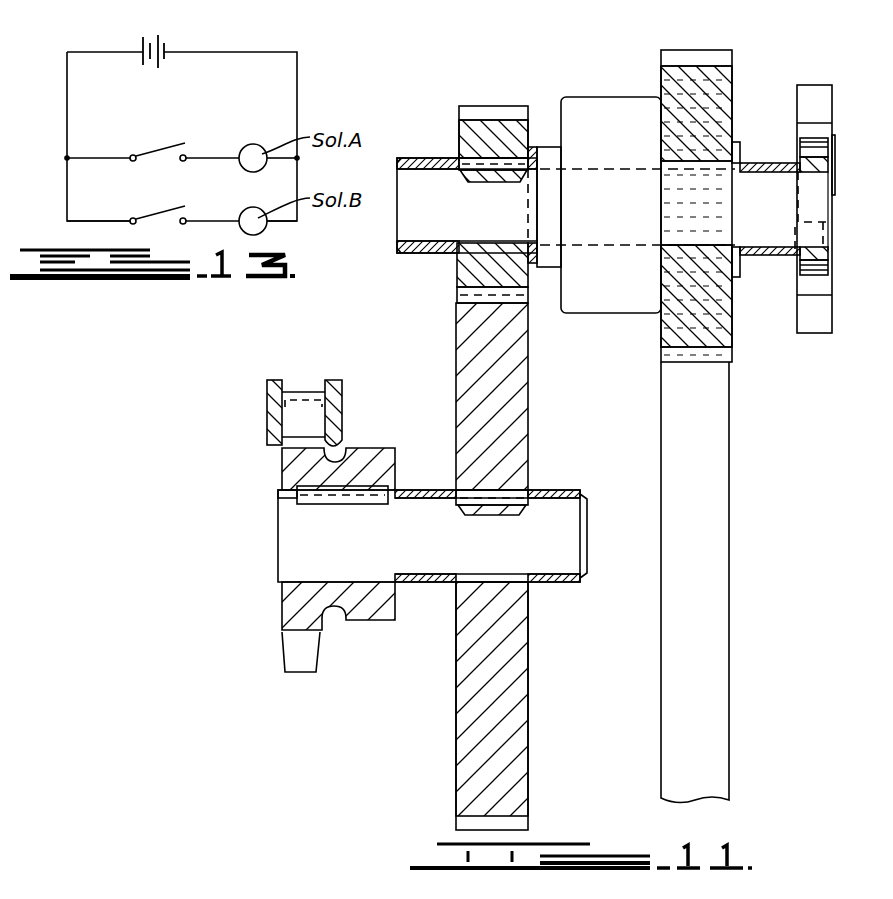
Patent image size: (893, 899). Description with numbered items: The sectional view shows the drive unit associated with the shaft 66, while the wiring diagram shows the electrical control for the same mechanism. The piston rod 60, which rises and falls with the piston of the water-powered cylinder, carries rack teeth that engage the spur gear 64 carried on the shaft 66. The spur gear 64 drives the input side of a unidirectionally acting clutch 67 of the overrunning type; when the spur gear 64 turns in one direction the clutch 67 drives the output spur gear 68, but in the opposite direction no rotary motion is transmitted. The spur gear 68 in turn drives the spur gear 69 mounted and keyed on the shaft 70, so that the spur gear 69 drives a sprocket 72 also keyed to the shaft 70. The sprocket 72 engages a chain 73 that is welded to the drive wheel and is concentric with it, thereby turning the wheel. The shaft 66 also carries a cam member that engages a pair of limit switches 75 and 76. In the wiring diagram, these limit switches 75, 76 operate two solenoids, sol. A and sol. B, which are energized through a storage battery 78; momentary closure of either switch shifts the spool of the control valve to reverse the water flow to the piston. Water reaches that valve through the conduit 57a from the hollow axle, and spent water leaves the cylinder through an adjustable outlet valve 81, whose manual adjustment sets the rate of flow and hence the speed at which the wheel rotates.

In FIG. 11, the piston rod 60 is at (703, 648).
In FIG. 11, the spur gear 64 is at (668, 77).
In FIG. 11, the shaft 66 is at (757, 186).
In FIG. 11, the unidirectionally acting clutch 67 is at (597, 300).
In FIG. 11, the output spur gear 68 is at (470, 126).
In FIG. 11, the spur gear 69 is at (470, 368).
In FIG. 11, the shaft 70 is at (558, 543).
In FIG. 11, the sprocket 72 is at (372, 612).
In FIG. 11, the chain 73 is at (268, 400).
In FIG. 13, the limit switch 75 is at (167, 124).
In FIG. 13, the limit switch 76 is at (166, 210).
In FIG. 13, the storage battery 78 is at (163, 52).
In FIG. 11, the conduit 57a is at (139, 887).
In FIG. 11, the adjustable outlet valve 81 is at (304, 888).